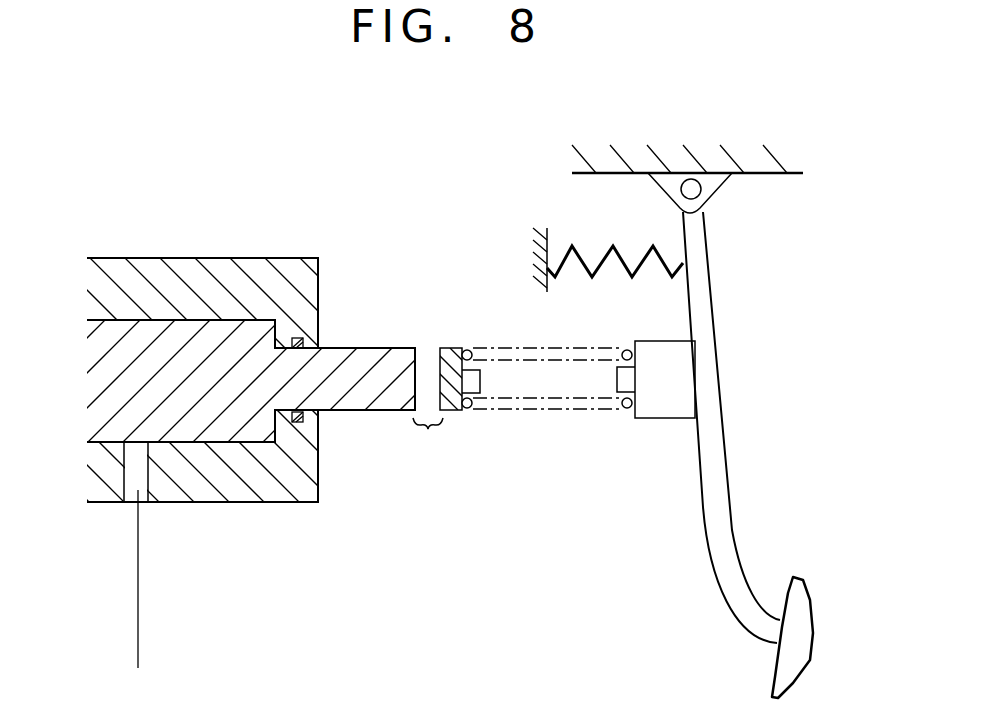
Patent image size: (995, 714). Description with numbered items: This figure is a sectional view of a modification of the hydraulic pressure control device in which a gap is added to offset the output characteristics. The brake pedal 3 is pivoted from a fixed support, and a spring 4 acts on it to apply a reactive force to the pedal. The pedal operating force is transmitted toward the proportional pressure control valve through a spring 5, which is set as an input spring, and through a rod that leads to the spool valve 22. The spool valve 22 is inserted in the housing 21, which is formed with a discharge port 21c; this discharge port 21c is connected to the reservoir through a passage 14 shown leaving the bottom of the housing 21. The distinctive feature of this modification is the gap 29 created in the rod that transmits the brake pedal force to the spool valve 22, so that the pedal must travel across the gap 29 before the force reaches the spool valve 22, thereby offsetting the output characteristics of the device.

The brake pedal 3 is at (722, 490).
The spring 4 is at (570, 243).
The spring 5 is at (537, 405).
The passage 14 is at (138, 630).
The housing 21 is at (302, 490).
The discharge port 21c is at (137, 490).
The spool valve 22 is at (229, 338).
The gap 29 is at (428, 440).